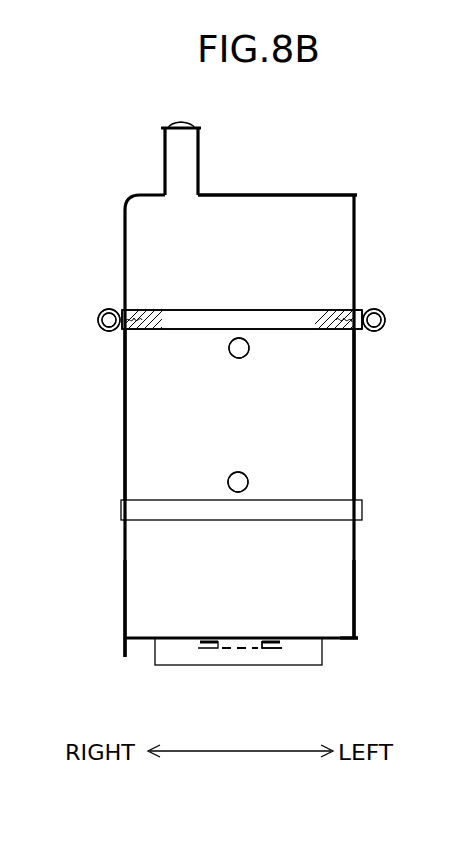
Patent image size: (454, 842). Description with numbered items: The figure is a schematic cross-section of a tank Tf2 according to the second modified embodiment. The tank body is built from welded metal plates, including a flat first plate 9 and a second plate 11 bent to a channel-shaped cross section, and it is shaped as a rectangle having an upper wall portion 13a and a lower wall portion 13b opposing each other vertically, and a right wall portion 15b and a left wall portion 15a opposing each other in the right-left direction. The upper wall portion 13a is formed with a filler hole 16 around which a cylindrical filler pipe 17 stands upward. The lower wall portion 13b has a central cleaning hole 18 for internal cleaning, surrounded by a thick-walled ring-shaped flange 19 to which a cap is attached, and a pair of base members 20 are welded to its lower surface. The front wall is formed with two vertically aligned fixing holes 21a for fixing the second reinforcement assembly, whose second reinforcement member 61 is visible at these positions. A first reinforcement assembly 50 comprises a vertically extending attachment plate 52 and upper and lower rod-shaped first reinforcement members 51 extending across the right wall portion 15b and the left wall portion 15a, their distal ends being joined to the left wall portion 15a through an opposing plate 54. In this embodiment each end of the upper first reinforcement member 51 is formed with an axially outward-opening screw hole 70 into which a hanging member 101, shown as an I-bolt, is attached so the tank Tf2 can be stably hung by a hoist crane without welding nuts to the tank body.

The tank Tf2 is at (350, 126).
The first plate 9 is at (356, 230).
The upper wall portion 13a is at (302, 194).
The lower wall portion 13b is at (333, 640).
The second plate 11 is at (353, 641).
The left wall portion 15a is at (355, 580).
The right wall portion 15b is at (124, 586).
The filler hole 16 is at (199, 192).
The filler pipe 17 is at (199, 147).
The first reinforcement assembly 50 is at (118, 350).
The hanging member 101 is at (385, 322).
The screw hole 70 is at (152, 320).
The first reinforcement member 51 is at (153, 322).
The attachment plate 52 is at (124, 428).
The opposing plate 54 is at (356, 386).
The second reinforcement member 61 is at (229, 348).
The fixing hole 21a is at (244, 358).
The base member 20 is at (187, 666).
The cleaning hole 18 is at (255, 638).
The flange 19 is at (270, 649).